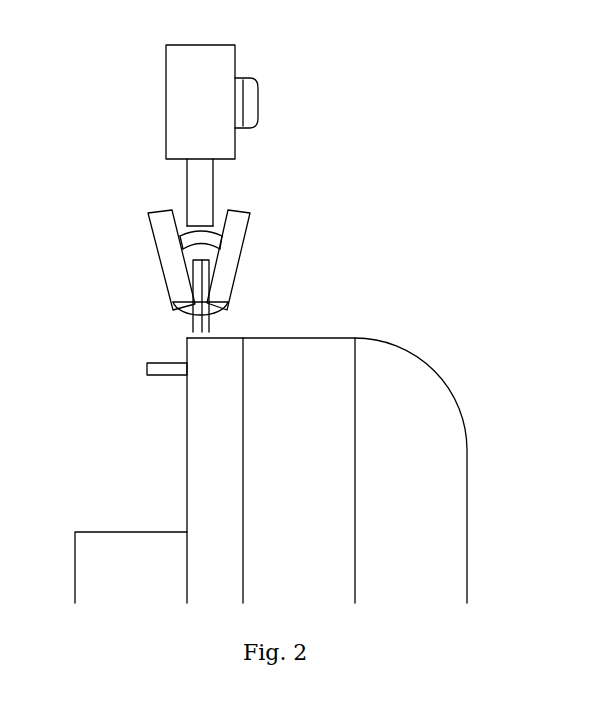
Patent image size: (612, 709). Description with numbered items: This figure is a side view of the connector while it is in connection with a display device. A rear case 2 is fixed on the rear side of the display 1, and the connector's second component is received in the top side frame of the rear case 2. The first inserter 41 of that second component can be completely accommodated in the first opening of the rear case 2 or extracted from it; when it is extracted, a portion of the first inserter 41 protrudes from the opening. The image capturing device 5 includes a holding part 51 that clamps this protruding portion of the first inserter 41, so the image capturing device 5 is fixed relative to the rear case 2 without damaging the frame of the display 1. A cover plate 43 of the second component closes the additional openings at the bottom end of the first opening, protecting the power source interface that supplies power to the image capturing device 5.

The display 1 is at (408, 420).
The rear case 2 is at (213, 497).
The image capturing device 5 is at (218, 78).
The first inserter 41 is at (205, 327).
The cover plate 43 is at (158, 367).
The holding part 51 is at (228, 252).